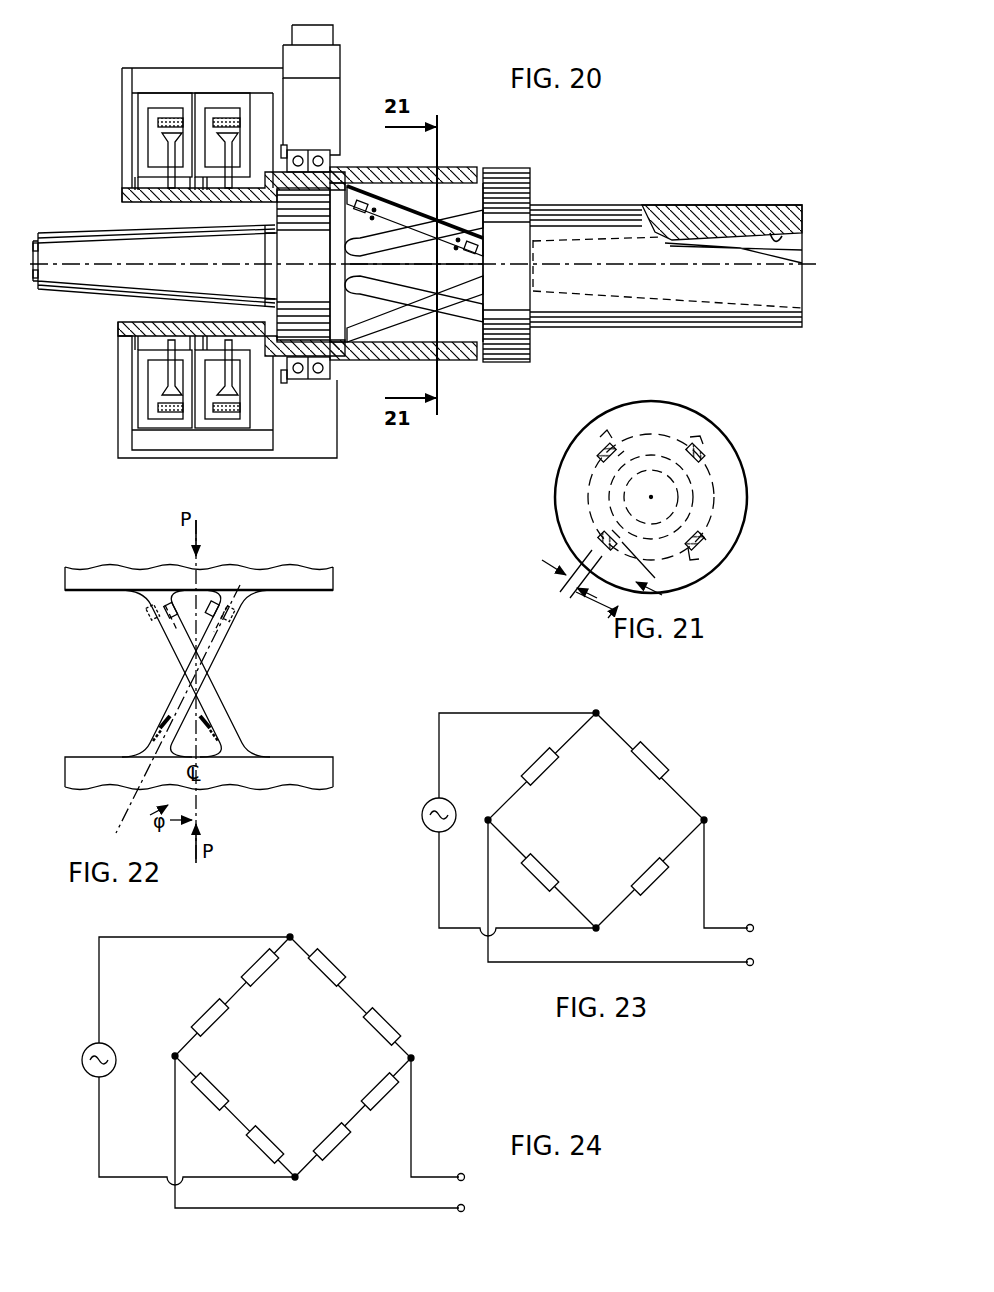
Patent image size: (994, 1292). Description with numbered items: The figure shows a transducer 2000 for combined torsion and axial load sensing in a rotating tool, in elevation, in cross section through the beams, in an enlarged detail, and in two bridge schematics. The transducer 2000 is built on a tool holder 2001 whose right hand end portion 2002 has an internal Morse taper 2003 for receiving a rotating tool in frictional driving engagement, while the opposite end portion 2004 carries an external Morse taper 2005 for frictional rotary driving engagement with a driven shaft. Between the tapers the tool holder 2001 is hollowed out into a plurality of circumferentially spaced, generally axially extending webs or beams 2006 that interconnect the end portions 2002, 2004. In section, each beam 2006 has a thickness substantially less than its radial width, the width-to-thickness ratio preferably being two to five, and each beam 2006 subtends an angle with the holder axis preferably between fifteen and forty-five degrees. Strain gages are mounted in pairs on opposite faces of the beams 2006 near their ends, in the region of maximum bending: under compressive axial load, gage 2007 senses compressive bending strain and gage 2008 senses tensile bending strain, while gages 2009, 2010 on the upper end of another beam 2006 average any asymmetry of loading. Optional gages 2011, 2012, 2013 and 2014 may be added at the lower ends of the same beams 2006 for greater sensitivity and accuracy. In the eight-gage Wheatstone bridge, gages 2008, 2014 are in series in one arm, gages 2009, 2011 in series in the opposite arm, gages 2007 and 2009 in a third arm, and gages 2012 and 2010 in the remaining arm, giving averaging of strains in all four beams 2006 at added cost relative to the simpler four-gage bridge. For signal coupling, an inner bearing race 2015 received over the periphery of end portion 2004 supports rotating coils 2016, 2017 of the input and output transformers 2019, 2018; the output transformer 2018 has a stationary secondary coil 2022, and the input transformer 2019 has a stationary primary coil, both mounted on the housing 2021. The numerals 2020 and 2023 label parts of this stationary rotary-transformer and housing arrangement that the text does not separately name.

In FIG. 20, the transducer 2000 is at (426, 290).
In FIG. 22, the transducer 2000 is at (250, 647).
In FIG. 23, the transducer 2000 is at (588, 825).
In FIG. 24, the transducer 2000 is at (273, 1064).
In FIG. 20, the tool holder 2001 is at (515, 168).
In FIG. 21, the tool holder 2001 is at (668, 403).
In FIG. 22, the tool holder 2001 is at (333, 578).
In FIG. 20, the right hand end portion 2002 is at (672, 207).
In FIG. 20, the internal Morse taper 2003 is at (778, 230).
In FIG. 20, the opposite end portion 2004 is at (265, 307).
In FIG. 22, the opposite end portion 2004 is at (333, 770).
In FIG. 20, the external Morse taper 2005 is at (104, 233).
In FIG. 20, the webs or beams 2006 is at (470, 200).
In FIG. 21, the webs or beams 2006 is at (708, 525).
In FIG. 22, the webs or beams 2006 is at (170, 674).
In FIG. 22, the strain gage 2007 is at (220, 625).
In FIG. 23, the strain gage 2007 is at (655, 752).
In FIG. 24, the strain gage 2007 is at (320, 958).
In FIG. 22, the strain gage 2008 is at (234, 613).
In FIG. 23, the strain gage 2008 is at (536, 760).
In FIG. 24, the strain gage 2008 is at (258, 960).
In FIG. 22, the strain gage 2009 is at (150, 612).
In FIG. 23, the strain gage 2009 is at (655, 886).
In FIG. 24, the strain gage 2009 is at (372, 1086).
In FIG. 22, the strain gage 2010 is at (172, 606).
In FIG. 23, the strain gage 2010 is at (550, 868).
In FIG. 24, the strain gage 2010 is at (210, 1082).
In FIG. 22, the strain gage 2011 is at (212, 721).
In FIG. 24, the strain gage 2011 is at (340, 1148).
In FIG. 22, the strain gage 2012 is at (220, 734).
In FIG. 24, the strain gage 2012 is at (268, 1138).
In FIG. 22, the strain gage 2013 is at (152, 737).
In FIG. 24, the strain gage 2013 is at (370, 1025).
In FIG. 22, the strain gage 2014 is at (158, 722).
In FIG. 24, the strain gage 2014 is at (208, 1008).
In FIG. 20, the inner bearing race 2015 is at (226, 102).
In FIG. 20, the rotating coil 2016 is at (162, 141).
In FIG. 20, the rotating coil 2017 is at (220, 138).
In FIG. 20, the output transformer 2018 is at (158, 106).
In FIG. 20, the input transformer 2019 is at (240, 106).
In FIG. 20, the bearing 2020 is at (313, 380).
In FIG. 20, the housing 2021 is at (210, 412).
In FIG. 20, the stationary secondary coil 2022 is at (162, 407).
In FIG. 20, the slip ring 2023 is at (223, 408).